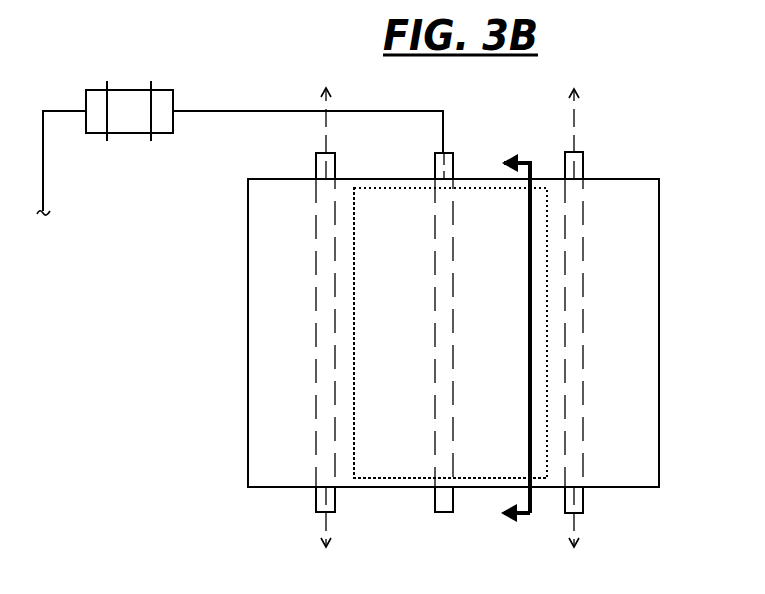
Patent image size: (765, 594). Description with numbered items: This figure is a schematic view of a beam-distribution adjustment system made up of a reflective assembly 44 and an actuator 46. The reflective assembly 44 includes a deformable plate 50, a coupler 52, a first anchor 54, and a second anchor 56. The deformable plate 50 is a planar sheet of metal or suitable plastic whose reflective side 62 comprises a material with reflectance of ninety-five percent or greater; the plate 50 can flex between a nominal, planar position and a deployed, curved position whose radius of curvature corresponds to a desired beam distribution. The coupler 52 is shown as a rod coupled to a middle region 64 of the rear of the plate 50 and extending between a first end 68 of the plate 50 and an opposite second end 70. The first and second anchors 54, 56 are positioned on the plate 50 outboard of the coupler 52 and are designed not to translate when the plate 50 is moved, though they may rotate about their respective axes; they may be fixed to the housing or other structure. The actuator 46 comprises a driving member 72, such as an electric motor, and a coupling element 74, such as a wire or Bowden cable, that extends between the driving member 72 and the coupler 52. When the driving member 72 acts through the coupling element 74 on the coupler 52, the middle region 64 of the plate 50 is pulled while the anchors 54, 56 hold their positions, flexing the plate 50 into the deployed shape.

The reflective assembly 44 is at (397, 320).
The actuator 46 is at (240, 126).
The deformable plate 50 is at (274, 178).
The coupler 52 is at (455, 158).
The first anchor 54 is at (568, 152).
The second anchor 56 is at (323, 153).
The reflective side 62 is at (263, 437).
The middle region 64 is at (353, 312).
The first end 68 is at (380, 178).
The second end 70 is at (390, 487).
The driving member 72 is at (97, 90).
The coupling element 74 is at (192, 110).